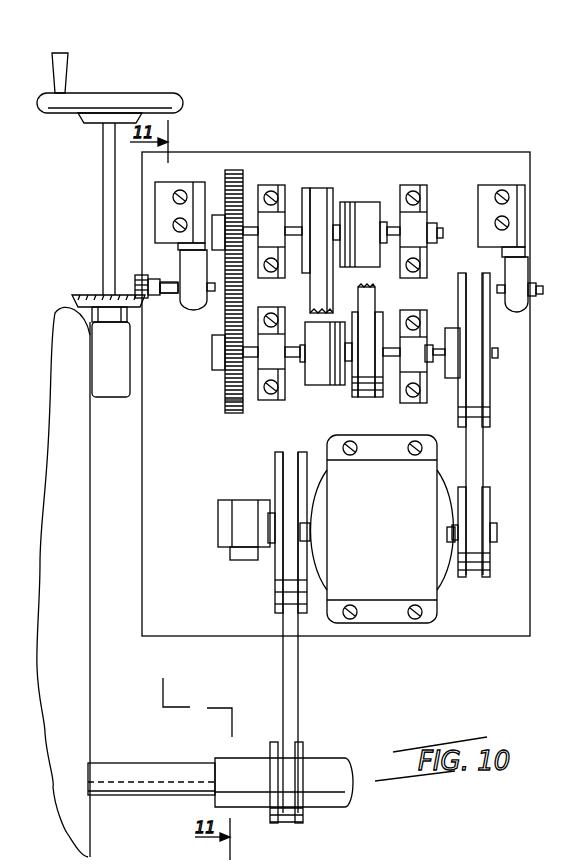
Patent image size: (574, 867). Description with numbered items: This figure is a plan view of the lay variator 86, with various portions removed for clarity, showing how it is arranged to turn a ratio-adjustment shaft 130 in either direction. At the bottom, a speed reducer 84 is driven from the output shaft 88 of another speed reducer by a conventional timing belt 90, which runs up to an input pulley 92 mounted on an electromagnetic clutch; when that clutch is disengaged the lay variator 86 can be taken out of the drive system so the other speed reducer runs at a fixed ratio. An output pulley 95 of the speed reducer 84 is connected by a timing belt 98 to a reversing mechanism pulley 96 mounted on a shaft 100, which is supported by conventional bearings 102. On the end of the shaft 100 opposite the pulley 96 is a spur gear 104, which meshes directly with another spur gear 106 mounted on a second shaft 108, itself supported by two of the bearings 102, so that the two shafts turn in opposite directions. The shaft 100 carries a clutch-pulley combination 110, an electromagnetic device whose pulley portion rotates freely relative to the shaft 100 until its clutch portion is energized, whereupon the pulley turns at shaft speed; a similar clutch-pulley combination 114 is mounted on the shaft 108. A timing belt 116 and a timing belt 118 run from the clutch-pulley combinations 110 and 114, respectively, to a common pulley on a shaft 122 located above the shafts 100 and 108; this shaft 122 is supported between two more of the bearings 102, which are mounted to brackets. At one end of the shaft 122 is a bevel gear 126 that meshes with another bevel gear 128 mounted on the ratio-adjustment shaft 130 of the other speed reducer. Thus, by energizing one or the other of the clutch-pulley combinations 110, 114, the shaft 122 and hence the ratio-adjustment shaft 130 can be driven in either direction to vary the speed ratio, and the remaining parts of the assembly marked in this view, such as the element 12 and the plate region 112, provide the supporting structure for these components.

The solenoid cylinder 12 is at (540, 290).
The speed reducer 84 is at (378, 633).
The lay variator 86 is at (400, 129).
The output shaft 88 is at (175, 767).
The timing belt 90 is at (280, 653).
The input pulley 92 is at (275, 583).
The output pulley 95 is at (490, 513).
The reversing mechanism pulley 96 is at (490, 413).
The timing belt 98 is at (480, 465).
The shaft 100 is at (498, 352).
The bearings 102 is at (275, 185).
The spur gear 104 is at (223, 407).
The spur gear 106 is at (225, 170).
The shaft 108 is at (436, 232).
The clutch-pulley combination 110 is at (352, 378).
The mounting plate 112 is at (138, 636).
The clutch-pulley combination 114 is at (333, 195).
The timing belt 116 is at (373, 303).
The timing belt 118 is at (327, 297).
The shaft 122 is at (167, 303).
The bevel gear 126 is at (137, 277).
The bevel gear 128 is at (80, 297).
The ratio-adjustment shaft 130 is at (102, 198).